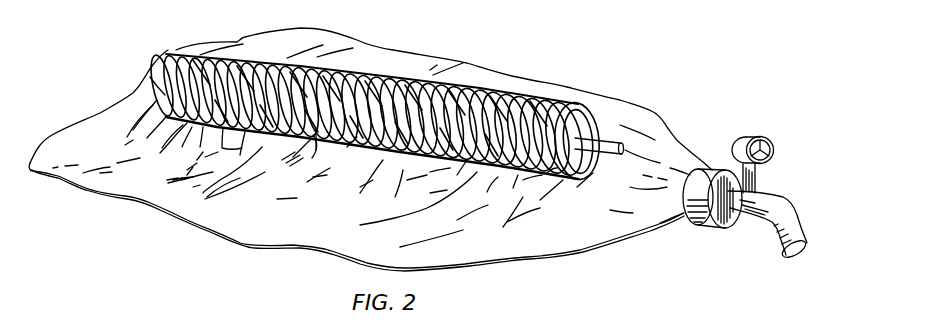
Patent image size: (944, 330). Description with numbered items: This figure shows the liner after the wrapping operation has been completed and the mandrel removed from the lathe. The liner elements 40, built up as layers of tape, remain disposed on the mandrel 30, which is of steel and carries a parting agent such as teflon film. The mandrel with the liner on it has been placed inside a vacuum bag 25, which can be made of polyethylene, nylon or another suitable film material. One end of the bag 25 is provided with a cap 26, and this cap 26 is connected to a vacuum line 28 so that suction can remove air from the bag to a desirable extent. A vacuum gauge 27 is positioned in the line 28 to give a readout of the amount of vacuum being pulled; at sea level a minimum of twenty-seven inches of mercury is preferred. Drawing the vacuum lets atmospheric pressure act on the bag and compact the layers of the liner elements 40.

The vacuum bag 25 is at (228, 217).
The cap 26 is at (703, 227).
The vacuum gauge 27 is at (767, 133).
The vacuum line 28 is at (793, 209).
The mandrel 30 is at (587, 123).
The liner elements 40 is at (413, 84).